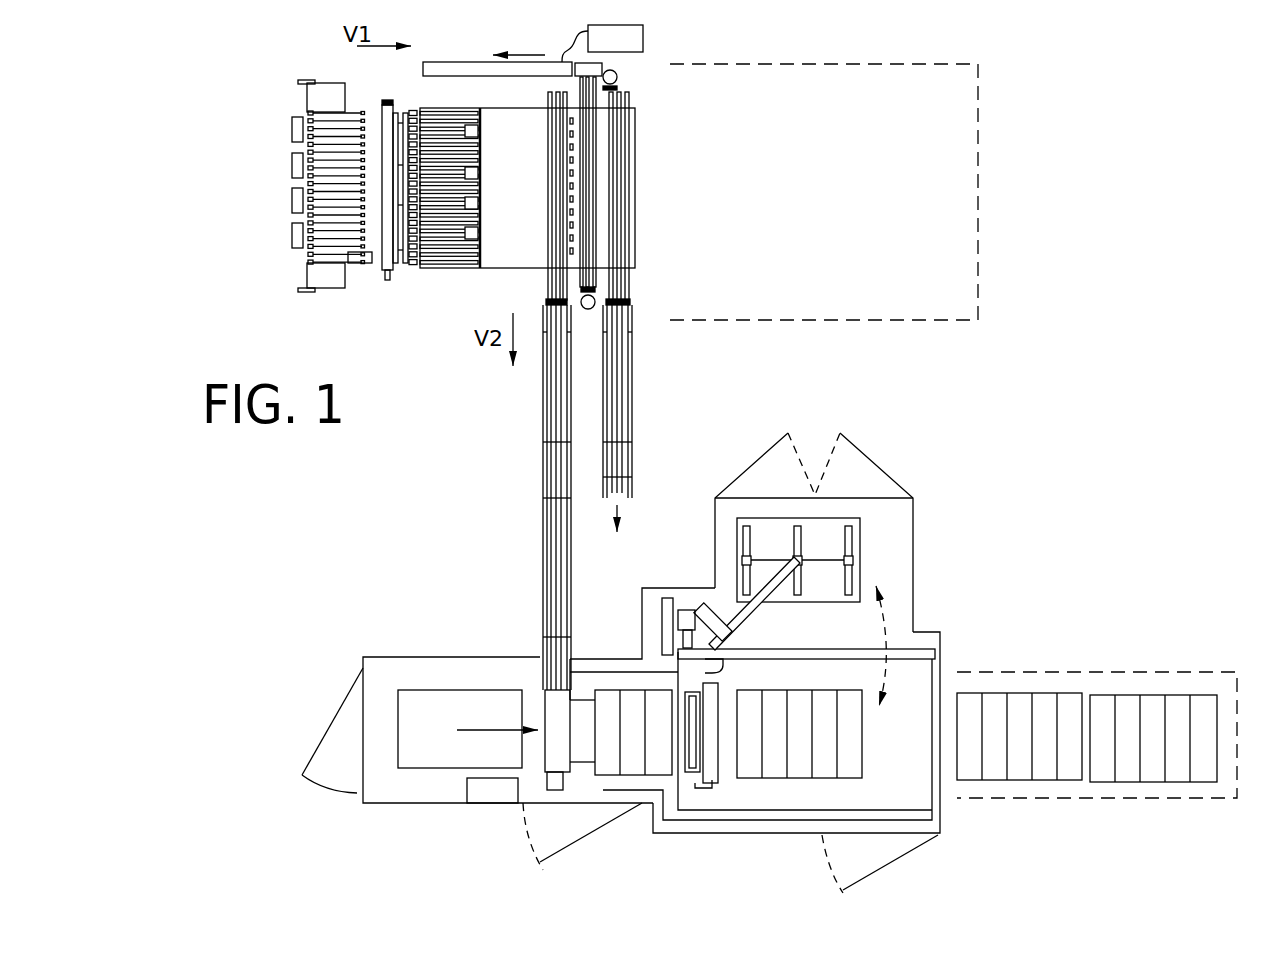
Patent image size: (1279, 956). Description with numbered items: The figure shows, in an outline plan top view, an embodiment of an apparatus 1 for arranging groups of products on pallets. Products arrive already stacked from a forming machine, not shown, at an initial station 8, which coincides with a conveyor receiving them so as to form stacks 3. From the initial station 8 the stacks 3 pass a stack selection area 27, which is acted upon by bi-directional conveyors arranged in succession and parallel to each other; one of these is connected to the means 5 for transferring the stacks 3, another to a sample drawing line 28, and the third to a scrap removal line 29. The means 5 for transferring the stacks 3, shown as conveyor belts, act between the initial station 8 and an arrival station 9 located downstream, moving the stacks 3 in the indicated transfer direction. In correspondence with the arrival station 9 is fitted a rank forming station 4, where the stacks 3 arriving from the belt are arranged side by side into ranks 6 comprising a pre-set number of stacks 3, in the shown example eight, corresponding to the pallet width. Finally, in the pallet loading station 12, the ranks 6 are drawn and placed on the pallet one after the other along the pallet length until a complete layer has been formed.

The apparatus 1 is at (999, 196).
The stacks 3 is at (543, 442).
The rank forming station 4 is at (535, 786).
The means for transferring the stacks 5 is at (535, 427).
The ranks 6 is at (601, 787).
The initial station 8 is at (291, 78).
The arrival station 9 is at (534, 650).
The pallet loading station 12 is at (758, 841).
The stack selection area 27 is at (649, 184).
The sample drawing line 28 is at (447, 55).
The scrap removal line 29 is at (649, 406).